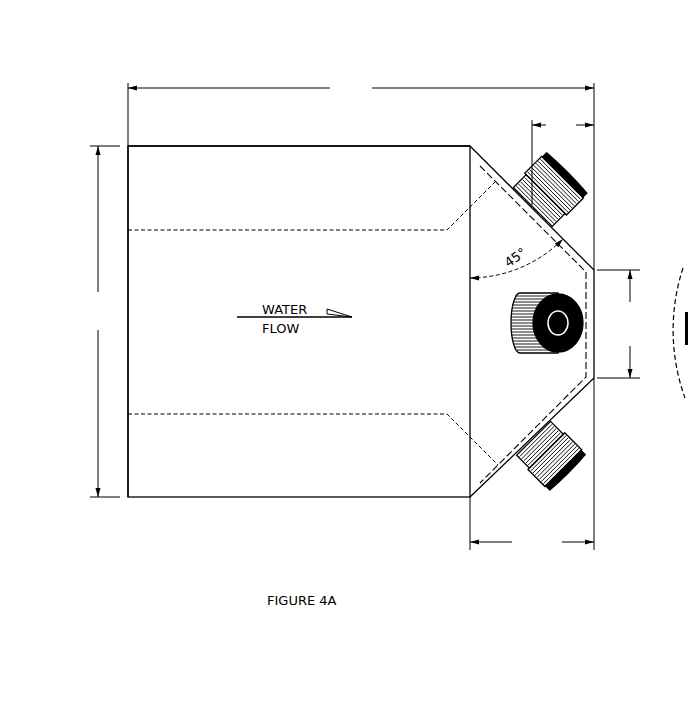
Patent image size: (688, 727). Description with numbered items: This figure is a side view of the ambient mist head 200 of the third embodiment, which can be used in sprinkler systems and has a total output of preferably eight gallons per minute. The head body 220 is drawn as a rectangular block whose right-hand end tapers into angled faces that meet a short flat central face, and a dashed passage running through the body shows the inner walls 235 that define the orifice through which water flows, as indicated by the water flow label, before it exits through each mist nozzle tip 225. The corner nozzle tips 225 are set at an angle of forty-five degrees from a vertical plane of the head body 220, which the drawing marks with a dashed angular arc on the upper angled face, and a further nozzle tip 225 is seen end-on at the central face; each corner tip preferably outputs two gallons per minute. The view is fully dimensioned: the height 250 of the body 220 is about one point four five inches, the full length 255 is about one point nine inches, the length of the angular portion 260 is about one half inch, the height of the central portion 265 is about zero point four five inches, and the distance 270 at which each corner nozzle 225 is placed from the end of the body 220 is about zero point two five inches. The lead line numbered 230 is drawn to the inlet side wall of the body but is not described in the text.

The ambient mist head 200 is at (163, 520).
The head body 220 is at (179, 158).
The mist nozzle tip 225 is at (578, 292).
The inlet side wall 230 is at (128, 332).
The inner walls 235 is at (195, 227).
The height 250 is at (97, 321).
The full length 255 is at (361, 176).
The length of the angular portion 260 is at (532, 469).
The height of the central portion 265 is at (618, 324).
The distance 270 is at (563, 161).